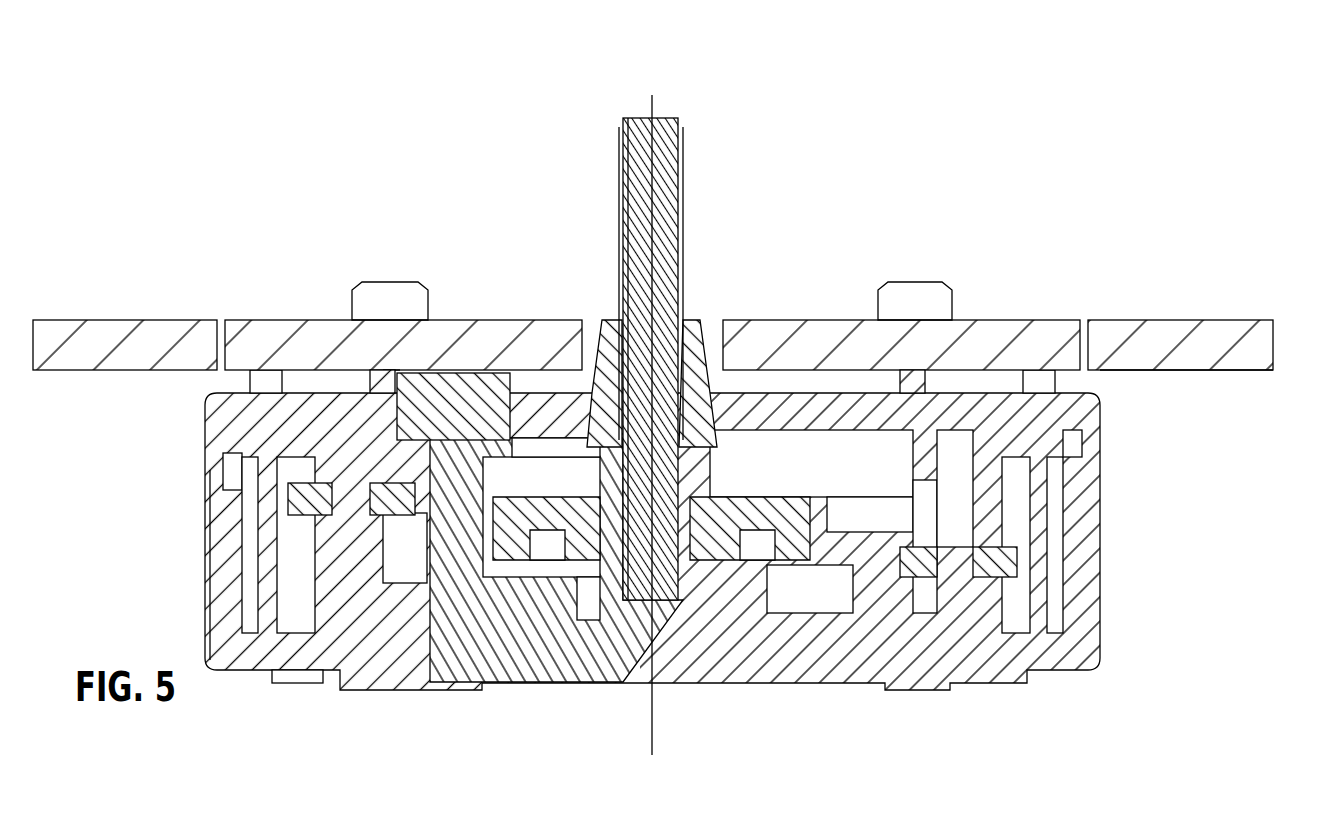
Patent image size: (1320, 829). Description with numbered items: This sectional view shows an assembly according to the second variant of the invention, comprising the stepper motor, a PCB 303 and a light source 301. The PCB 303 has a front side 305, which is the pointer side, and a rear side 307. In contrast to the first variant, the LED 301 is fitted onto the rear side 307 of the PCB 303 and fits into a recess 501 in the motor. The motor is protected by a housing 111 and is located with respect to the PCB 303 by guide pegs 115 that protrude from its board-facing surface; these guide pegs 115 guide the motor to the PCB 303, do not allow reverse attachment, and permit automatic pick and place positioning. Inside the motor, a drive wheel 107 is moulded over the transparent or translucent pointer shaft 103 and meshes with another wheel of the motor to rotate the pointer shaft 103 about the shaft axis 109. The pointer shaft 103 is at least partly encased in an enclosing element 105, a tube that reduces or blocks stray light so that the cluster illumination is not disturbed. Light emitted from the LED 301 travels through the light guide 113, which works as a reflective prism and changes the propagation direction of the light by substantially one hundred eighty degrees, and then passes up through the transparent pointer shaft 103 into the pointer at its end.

The pointer shaft 103 is at (660, 118).
The enclosing element 105 is at (684, 178).
The drive wheel 107 is at (735, 560).
The shaft axis 109 is at (652, 108).
The housing 111 is at (1085, 565).
The light guide 113 is at (535, 635).
The guide pegs 115 is at (402, 300).
The light source 301 is at (442, 410).
The PCB 303 is at (1255, 340).
The front side 305 is at (1223, 322).
The rear side 307 is at (1178, 373).
The recess 501 is at (388, 368).